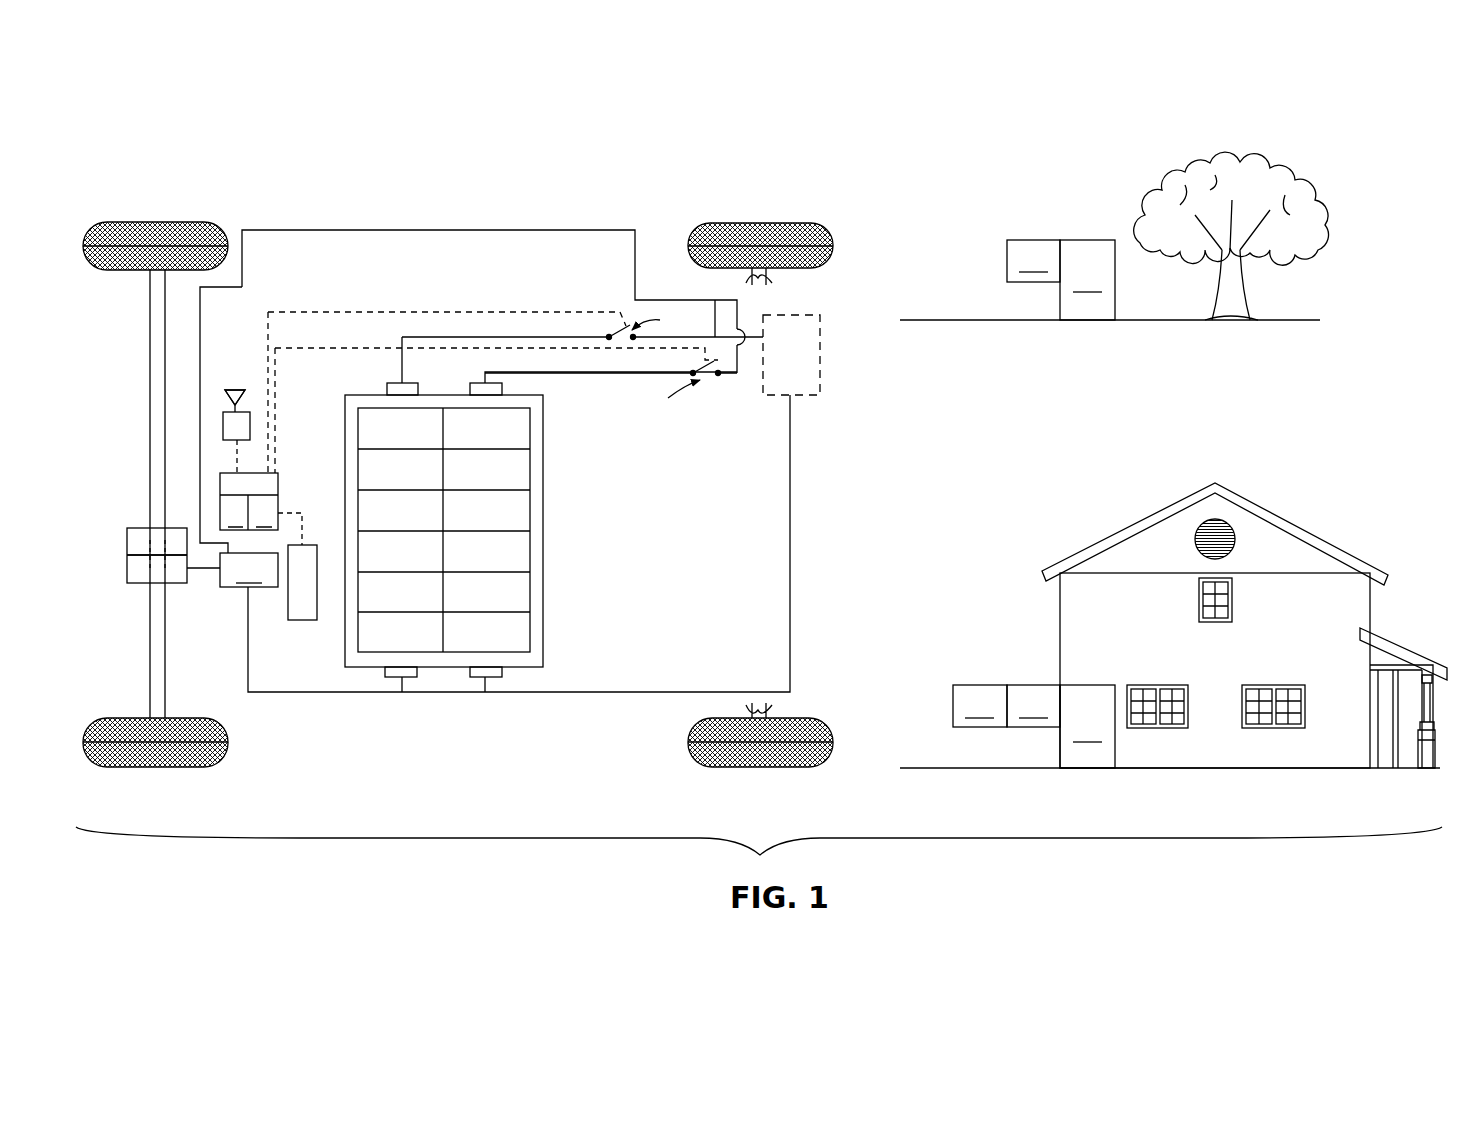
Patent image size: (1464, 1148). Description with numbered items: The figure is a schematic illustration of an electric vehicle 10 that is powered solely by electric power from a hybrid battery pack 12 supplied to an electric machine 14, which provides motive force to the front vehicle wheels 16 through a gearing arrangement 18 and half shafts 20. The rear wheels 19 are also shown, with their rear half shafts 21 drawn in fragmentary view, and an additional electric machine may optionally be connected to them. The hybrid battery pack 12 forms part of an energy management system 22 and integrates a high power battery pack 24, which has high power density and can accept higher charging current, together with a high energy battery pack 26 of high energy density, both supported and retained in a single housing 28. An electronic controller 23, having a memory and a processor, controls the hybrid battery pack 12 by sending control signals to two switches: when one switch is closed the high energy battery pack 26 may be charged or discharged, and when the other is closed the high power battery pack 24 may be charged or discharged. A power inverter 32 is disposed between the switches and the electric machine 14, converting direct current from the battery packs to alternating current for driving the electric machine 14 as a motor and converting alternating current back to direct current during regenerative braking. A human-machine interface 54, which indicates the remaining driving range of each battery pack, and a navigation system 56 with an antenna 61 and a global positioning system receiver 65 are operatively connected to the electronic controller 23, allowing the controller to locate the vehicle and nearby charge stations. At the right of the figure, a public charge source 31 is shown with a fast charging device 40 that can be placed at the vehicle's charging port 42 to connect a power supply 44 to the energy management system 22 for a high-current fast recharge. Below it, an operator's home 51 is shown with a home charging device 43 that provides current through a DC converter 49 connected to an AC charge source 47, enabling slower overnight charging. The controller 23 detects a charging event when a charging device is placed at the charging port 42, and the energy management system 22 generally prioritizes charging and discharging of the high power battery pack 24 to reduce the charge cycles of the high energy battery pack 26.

The electric vehicle 10 is at (348, 205).
The hybrid battery pack 12 is at (543, 583).
The electric machine 14 is at (135, 584).
The front vehicle wheels 16 is at (124, 222).
The gearing arrangement 18 is at (133, 527).
The rear wheels 19 is at (740, 226).
The half shafts 20 is at (149, 350).
The rear half shafts 21 is at (770, 280).
The energy management system 22 is at (546, 520).
The electronic controller 23 is at (278, 490).
The high power battery pack 24 is at (506, 638).
The high energy battery pack 26 is at (378, 638).
The housing 28 is at (538, 512).
The charge source 31 is at (1246, 122).
The power inverter 32 is at (249, 570).
The fast charging device 40 is at (1033, 261).
The charging port 42 is at (820, 366).
The home charging device 43 is at (980, 706).
The power supply 44 is at (1087, 280).
The AC charge source 47 is at (1087, 726).
The DC converter 49 is at (1033, 706).
The operator's home 51 is at (1290, 472).
The human-machine interface 54 is at (300, 620).
The navigation system 56 is at (225, 397).
The antenna 61 is at (238, 385).
The global positioning system receiver 65 is at (252, 427).